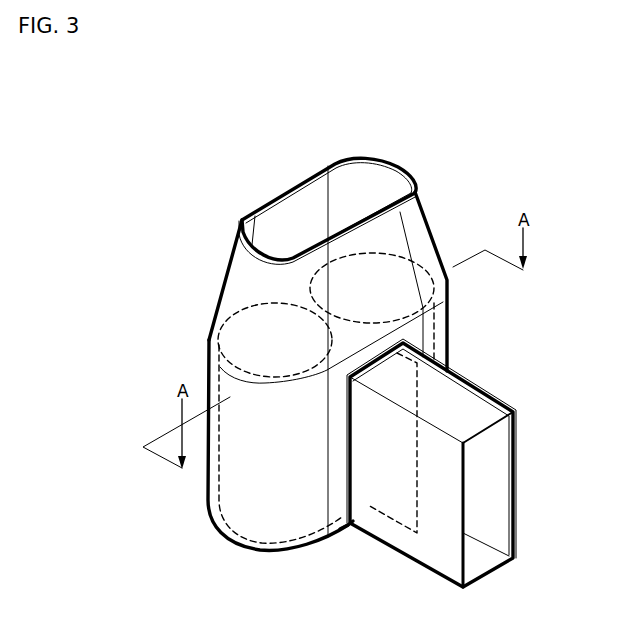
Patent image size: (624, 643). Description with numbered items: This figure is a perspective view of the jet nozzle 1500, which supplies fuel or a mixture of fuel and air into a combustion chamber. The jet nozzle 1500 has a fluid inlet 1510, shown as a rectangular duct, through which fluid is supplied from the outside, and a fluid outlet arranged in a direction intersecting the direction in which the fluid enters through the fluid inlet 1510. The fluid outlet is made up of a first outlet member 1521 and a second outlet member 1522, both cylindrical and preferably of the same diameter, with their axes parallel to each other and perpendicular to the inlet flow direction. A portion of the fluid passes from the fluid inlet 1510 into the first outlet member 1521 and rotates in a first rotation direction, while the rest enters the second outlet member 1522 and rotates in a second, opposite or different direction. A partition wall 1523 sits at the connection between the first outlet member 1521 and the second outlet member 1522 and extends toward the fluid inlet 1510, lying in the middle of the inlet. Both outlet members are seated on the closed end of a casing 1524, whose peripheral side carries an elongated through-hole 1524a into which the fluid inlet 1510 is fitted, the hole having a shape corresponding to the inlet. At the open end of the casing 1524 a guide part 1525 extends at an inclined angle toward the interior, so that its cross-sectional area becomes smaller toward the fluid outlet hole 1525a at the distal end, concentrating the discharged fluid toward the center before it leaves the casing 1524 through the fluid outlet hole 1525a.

The jet nozzle 1500 is at (218, 133).
The fluid inlet 1510 is at (497, 402).
The first outlet member 1521 is at (237, 315).
The second outlet member 1522 is at (403, 242).
The partition wall 1523 is at (417, 385).
The casing 1524 is at (207, 495).
The elongated through-hole 1524a is at (345, 498).
The guide part 1525 is at (427, 203).
The fluid outlet hole 1525a is at (372, 187).